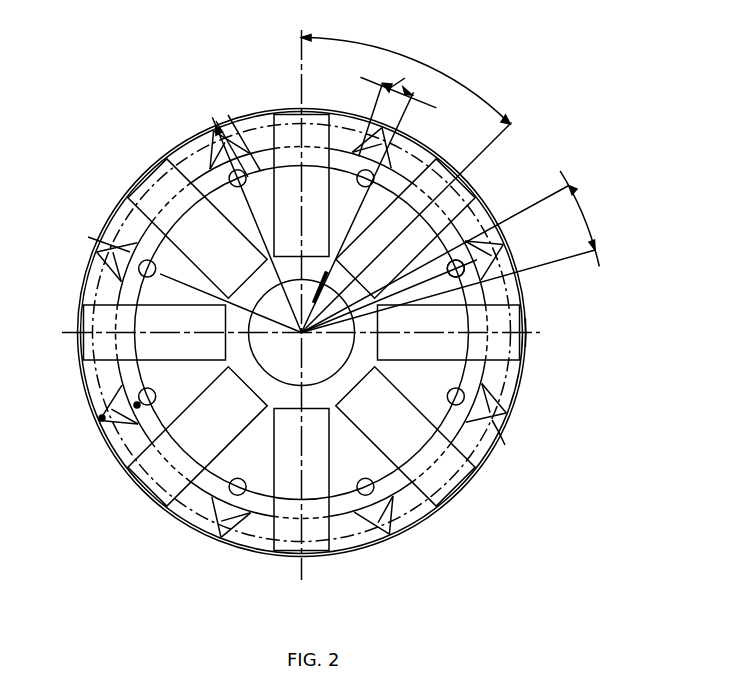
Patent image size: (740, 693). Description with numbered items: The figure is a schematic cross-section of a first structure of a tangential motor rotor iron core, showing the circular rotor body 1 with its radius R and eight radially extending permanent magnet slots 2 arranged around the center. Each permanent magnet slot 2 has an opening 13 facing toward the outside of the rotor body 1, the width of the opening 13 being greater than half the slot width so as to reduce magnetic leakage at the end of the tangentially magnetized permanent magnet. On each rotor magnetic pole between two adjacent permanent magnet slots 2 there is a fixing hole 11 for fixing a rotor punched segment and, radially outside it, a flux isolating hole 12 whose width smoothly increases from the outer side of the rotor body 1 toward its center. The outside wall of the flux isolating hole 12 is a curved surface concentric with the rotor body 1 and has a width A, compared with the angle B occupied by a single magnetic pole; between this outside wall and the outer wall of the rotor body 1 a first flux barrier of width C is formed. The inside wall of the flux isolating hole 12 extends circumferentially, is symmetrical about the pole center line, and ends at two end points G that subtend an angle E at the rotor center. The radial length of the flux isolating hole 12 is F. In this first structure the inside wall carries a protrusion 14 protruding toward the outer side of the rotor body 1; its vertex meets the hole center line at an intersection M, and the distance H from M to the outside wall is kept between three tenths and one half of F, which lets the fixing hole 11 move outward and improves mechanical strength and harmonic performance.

The rotor body 1 is at (126, 218).
The permanent magnet slots 2 is at (150, 184).
The fixing hole 11 is at (137, 407).
The flux isolating hole 12 is at (102, 420).
The opening 13 is at (523, 333).
The protrusion 14 is at (500, 437).
The width of the outside wall of the flux isolating hole A is at (420, 100).
The angle occupied by a single magnetic pole B is at (406, 72).
The width of the first flux barrier C is at (493, 235).
The angle between lines connecting the rotor center and the end points of the inside E is at (451, 252).
The radial length of the flux isolating hole F is at (238, 110).
The end points of the inside wall of the flux isolating hole G is at (486, 382).
The distance from the intersection M to the outside wall of the flux isolating hole H is at (88, 237).
The intersection of the protrusion vertex and the center line of the flux isolating M is at (490, 414).
The radius of the rotor body R is at (212, 118).